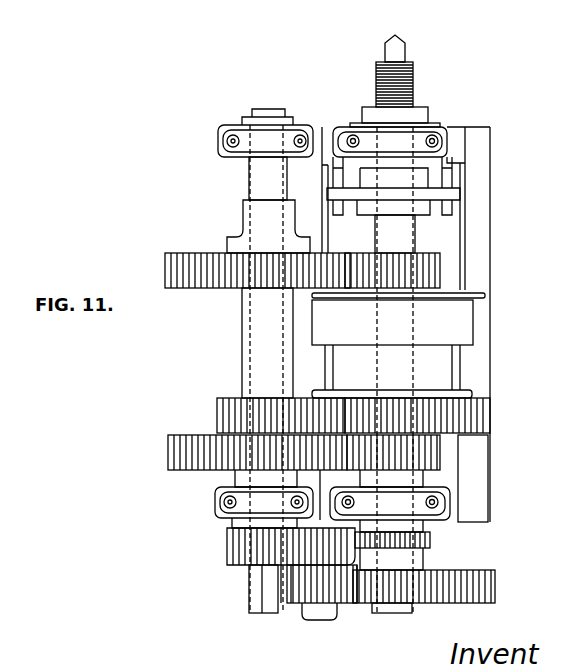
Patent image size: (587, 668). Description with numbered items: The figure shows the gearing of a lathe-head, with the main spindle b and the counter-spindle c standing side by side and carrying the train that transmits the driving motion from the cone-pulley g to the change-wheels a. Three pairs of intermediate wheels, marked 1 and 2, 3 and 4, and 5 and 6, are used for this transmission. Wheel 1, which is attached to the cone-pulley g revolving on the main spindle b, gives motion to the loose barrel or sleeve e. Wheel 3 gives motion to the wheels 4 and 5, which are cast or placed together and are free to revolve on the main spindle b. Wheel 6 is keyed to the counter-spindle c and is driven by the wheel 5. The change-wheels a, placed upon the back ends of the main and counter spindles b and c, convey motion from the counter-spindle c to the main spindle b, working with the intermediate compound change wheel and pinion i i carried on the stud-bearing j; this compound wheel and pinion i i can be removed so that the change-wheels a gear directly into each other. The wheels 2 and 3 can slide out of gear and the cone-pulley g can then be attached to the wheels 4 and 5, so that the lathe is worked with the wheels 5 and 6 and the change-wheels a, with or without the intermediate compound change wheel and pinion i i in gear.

The intermediate wheel 1 is at (405, 272).
The intermediate wheel 2 is at (195, 271).
The intermediate wheel 3 is at (235, 413).
The intermediate wheel 4 is at (462, 418).
The intermediate wheel 5 is at (410, 452).
The intermediate wheel 6 is at (185, 453).
The change-wheels a is at (250, 545).
The main spindle b is at (393, 427).
The counter-spindle c is at (234, 594).
The loose barrel or sleeve e is at (267, 343).
The cone-pulley g is at (398, 345).
The intermediate compound change wheel and pinion i is at (319, 600).
The stud-bearing j is at (322, 608).